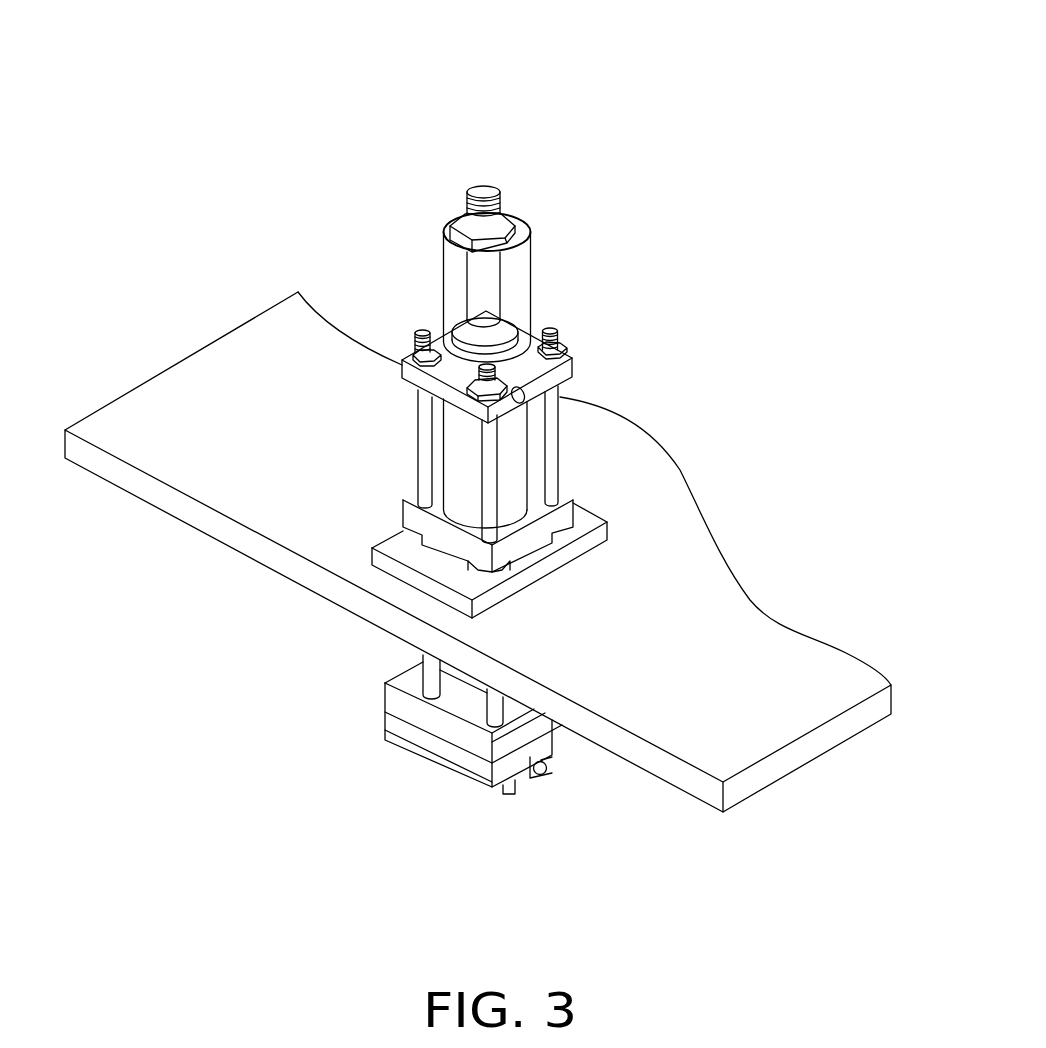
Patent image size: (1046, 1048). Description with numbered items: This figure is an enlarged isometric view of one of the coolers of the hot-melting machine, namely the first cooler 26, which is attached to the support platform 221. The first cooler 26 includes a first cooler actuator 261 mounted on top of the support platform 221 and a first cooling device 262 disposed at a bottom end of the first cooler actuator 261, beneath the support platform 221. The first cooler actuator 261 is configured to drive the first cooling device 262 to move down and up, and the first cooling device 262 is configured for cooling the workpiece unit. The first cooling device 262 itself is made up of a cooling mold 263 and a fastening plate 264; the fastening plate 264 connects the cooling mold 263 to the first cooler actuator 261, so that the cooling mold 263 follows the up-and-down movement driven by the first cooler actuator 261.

The first cooler 26 is at (508, 60).
The support platform 221 is at (746, 653).
The first cooler actuator 261 is at (512, 460).
The first cooling device 262 is at (414, 742).
The cooling mold 263 is at (385, 740).
The fastening plate 264 is at (447, 753).